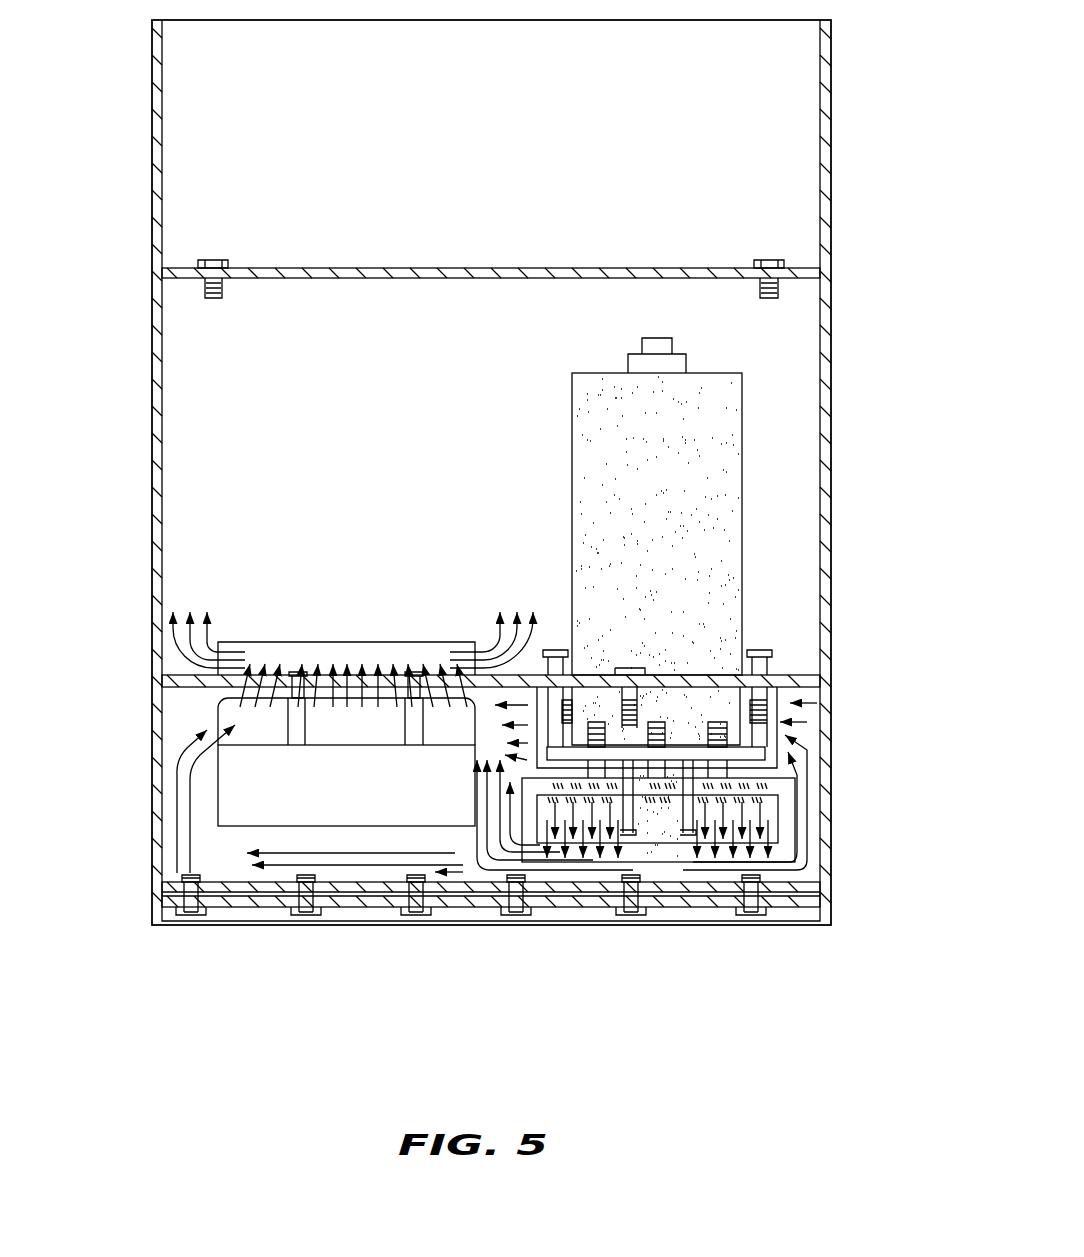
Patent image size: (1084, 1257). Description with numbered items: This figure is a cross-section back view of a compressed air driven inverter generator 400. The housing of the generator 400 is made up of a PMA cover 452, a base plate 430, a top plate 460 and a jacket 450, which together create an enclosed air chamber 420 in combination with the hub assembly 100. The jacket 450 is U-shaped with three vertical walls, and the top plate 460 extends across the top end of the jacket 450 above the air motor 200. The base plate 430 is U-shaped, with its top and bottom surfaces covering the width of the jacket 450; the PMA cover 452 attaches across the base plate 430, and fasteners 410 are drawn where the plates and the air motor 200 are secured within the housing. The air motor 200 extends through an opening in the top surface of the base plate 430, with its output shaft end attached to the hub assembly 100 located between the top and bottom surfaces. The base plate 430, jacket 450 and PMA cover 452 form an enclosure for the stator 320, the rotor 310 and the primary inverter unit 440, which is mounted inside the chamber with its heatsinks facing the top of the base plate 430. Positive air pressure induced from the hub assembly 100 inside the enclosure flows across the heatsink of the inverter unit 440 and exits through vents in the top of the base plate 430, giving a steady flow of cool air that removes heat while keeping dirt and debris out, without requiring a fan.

The hub assembly 100 is at (780, 767).
The air motor 200 is at (723, 373).
The rotor 310 is at (795, 802).
The stator 320 is at (780, 835).
The generator 400 is at (147, 137).
The fastening bolts 410 is at (760, 650).
The enclosed air chamber 420 is at (808, 717).
The base plate 430 is at (173, 880).
The primary inverter unit 440 is at (233, 812).
The jacket 450 is at (832, 407).
The PMA cover 452 is at (378, 907).
The top plate 460 is at (280, 268).